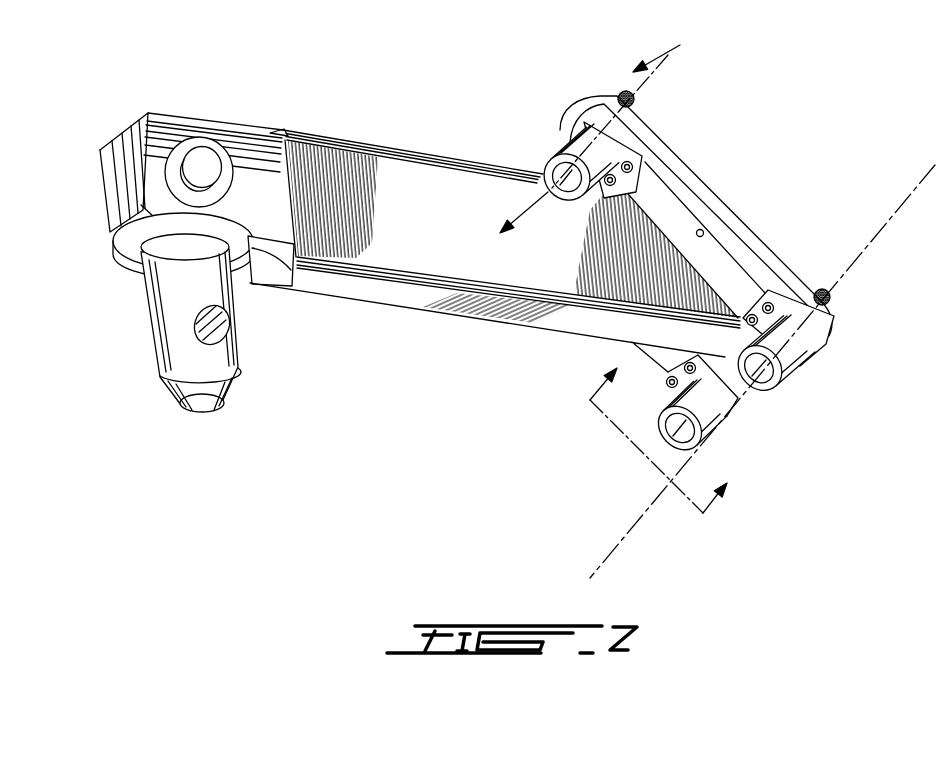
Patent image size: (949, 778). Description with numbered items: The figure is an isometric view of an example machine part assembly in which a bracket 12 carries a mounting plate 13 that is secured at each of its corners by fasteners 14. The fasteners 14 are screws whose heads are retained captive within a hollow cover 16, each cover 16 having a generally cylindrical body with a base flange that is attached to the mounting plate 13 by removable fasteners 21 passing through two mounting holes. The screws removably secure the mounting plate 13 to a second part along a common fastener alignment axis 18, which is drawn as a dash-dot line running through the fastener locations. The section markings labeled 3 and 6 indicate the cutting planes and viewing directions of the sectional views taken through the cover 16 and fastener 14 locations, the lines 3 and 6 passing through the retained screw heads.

The bracket 12 is at (334, 138).
The mounting plate 13 is at (713, 218).
The fasteners 14 is at (638, 103).
The hollow cover 16 is at (566, 138).
The common fastener alignment axis 18 is at (900, 202).
The removable fasteners 21 is at (768, 300).
The section line 3- 3 is at (647, 458).
The section line 6- 6 is at (577, 154).